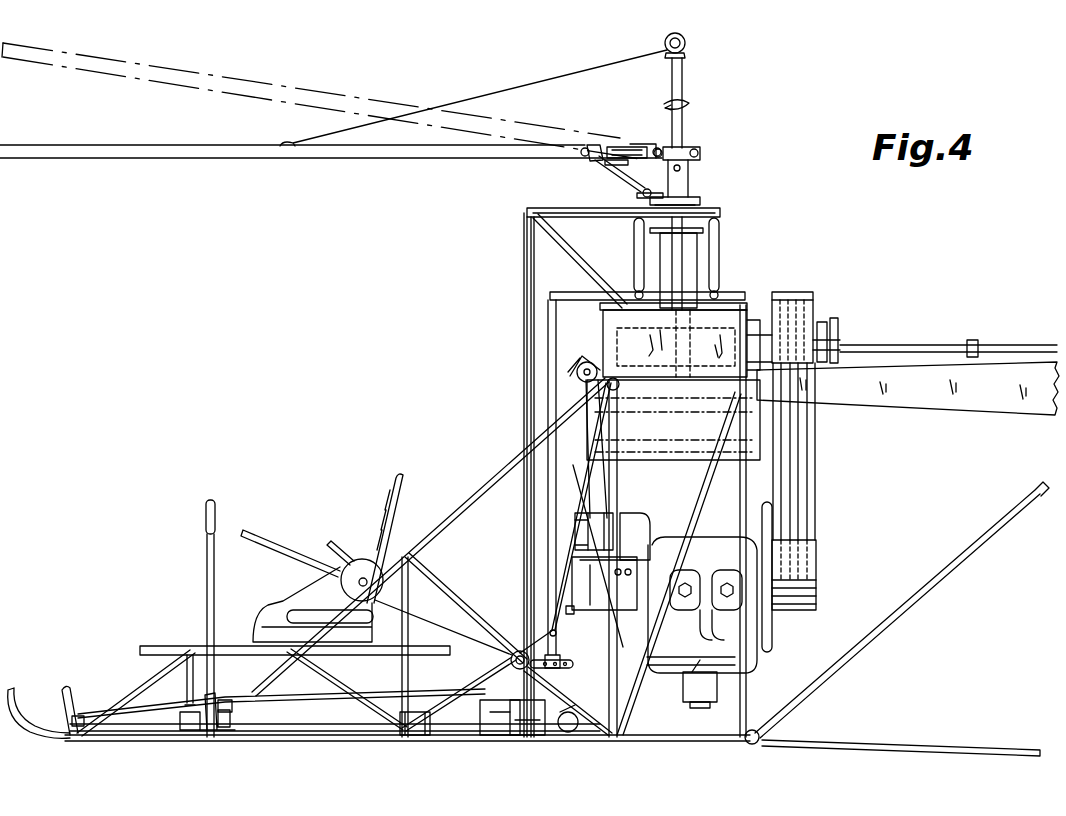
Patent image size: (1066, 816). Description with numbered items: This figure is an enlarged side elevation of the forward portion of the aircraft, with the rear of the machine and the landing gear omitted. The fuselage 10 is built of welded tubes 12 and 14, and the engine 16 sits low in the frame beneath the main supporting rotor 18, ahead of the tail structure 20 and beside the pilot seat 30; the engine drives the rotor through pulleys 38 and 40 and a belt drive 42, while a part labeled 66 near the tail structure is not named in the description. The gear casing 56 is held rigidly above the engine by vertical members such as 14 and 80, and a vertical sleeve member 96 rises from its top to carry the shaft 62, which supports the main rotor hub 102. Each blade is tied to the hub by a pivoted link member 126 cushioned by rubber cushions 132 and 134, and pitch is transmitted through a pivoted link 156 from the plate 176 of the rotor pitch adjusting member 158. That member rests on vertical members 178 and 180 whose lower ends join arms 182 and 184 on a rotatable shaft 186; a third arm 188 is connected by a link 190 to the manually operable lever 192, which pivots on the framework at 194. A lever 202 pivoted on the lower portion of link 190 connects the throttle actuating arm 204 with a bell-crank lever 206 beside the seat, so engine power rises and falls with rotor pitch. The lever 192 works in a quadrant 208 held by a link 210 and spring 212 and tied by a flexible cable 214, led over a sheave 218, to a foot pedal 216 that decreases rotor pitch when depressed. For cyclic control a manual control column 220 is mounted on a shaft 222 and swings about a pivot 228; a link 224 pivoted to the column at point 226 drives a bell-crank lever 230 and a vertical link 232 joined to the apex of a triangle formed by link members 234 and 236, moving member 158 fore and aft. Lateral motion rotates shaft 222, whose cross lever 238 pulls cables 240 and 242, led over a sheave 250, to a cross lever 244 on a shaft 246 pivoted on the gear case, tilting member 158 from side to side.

The fuselage 10 is at (696, 747).
The welded tube 12 is at (486, 495).
The vertical structural member 14 is at (745, 503).
The engine 16 is at (706, 530).
The main supporting rotor 18 is at (531, 134).
The tail structure 20 is at (1021, 356).
The pilot seat 30 is at (415, 457).
The pulley 38 is at (817, 560).
The pulley 40 is at (815, 294).
The belt drive 42 is at (815, 452).
The gear casing 56 is at (603, 329).
The shaft 62 is at (692, 186).
The tail rotor drive shaft 66 is at (940, 345).
The vertical structural member 80 is at (617, 503).
The vertical sleeve member 96 is at (698, 270).
The main rotor hub 102 is at (698, 150).
The pivoted link member 126 is at (640, 145).
The rubber cushion 132 is at (620, 147).
The rubber cushion 134 is at (590, 158).
The pivoted link 156 is at (620, 165).
The rotor pitch adjusting member 158 is at (703, 202).
The flat plate 176 is at (622, 178).
The vertical member 178 is at (637, 248).
The vertical member 180 is at (720, 250).
The arm 182 is at (637, 290).
The arm 184 is at (718, 293).
The rotatable shaft 186 is at (556, 296).
The third outwardly projecting arm 188 is at (548, 313).
The link 190 is at (516, 460).
The manually operable lever 192 is at (260, 535).
The pivot 194 is at (516, 652).
The lever 202 is at (560, 612).
The actuating arm 204 is at (718, 686).
The bell-crank lever 206 is at (340, 548).
The quadrant 208 is at (402, 652).
The link 210 is at (445, 692).
The spring 212 is at (482, 738).
The flexible cable 214 is at (142, 692).
The foot pedal 216 is at (70, 690).
The pulley or sheave 218 is at (410, 738).
The manual control column 220 is at (207, 572).
The shaft 222 is at (320, 741).
The link 224 is at (316, 695).
The point 226 is at (70, 730).
The control column pivot 228 is at (215, 736).
The bell-crank lever 230 is at (508, 708).
The vertical link 232 is at (524, 400).
The link member 234 is at (566, 210).
The link member 236 is at (545, 230).
The cross lever 238 is at (570, 737).
The cable 240 is at (565, 503).
The cable 242 is at (563, 530).
The cross lever 244 is at (676, 397).
The shaft 246 is at (675, 343).
The pulley or sheave 250 is at (575, 370).